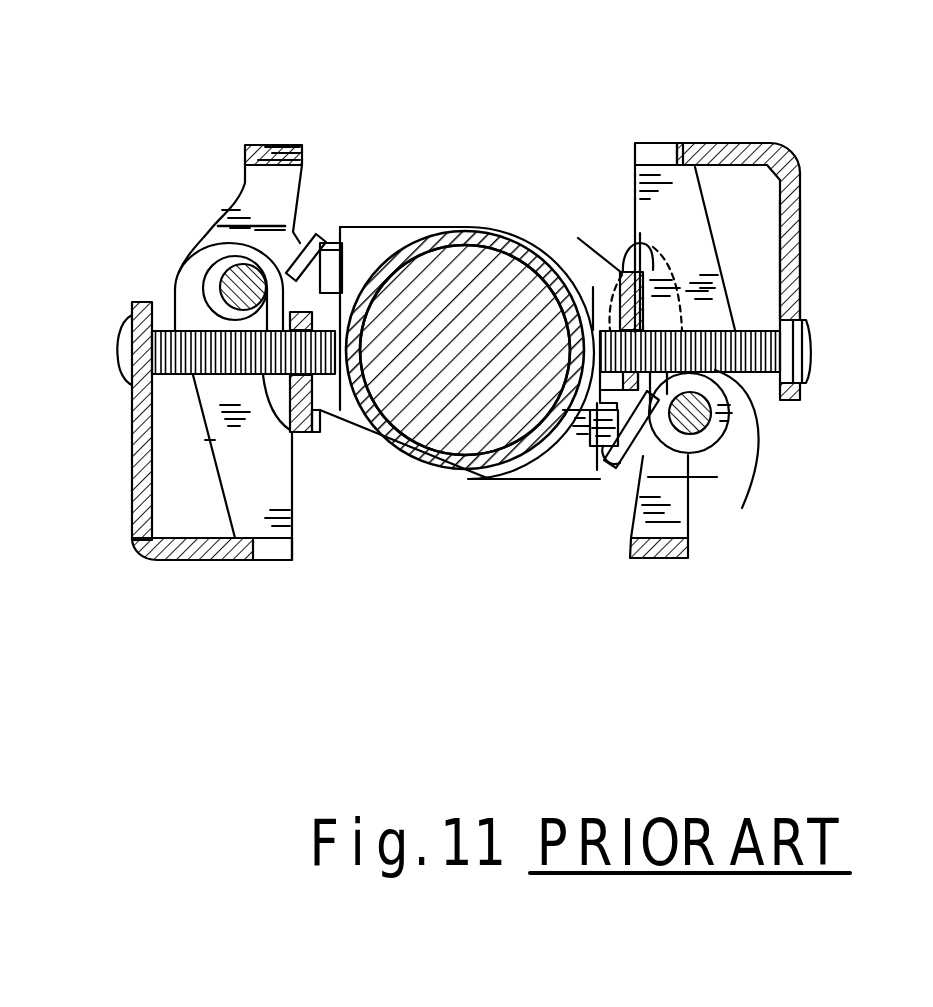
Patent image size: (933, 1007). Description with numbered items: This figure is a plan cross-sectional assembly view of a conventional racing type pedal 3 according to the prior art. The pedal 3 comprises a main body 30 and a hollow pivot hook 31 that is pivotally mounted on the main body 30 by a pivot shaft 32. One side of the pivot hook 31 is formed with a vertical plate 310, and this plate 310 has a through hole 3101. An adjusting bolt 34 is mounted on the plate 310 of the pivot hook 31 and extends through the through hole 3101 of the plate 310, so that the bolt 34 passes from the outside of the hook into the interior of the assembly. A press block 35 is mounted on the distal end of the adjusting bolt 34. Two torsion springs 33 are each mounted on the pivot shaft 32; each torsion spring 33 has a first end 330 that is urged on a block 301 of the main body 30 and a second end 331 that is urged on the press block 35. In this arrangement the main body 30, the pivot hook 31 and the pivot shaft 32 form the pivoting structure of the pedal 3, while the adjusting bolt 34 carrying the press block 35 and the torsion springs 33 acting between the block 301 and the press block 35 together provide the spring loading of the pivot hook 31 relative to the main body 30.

The racing type pedal 3 is at (379, 143).
The main body 30 is at (457, 232).
The block 301 is at (587, 433).
The hollow pivot hook 31 is at (698, 142).
The vertical plate 310 is at (801, 245).
The through hole 3101 is at (778, 377).
The pivot shaft 32 is at (692, 455).
The torsion spring 33 is at (688, 457).
The first end 330 is at (620, 470).
The second end 331 is at (640, 442).
The adjusting bolt 34 is at (812, 352).
The press block 35 is at (606, 263).